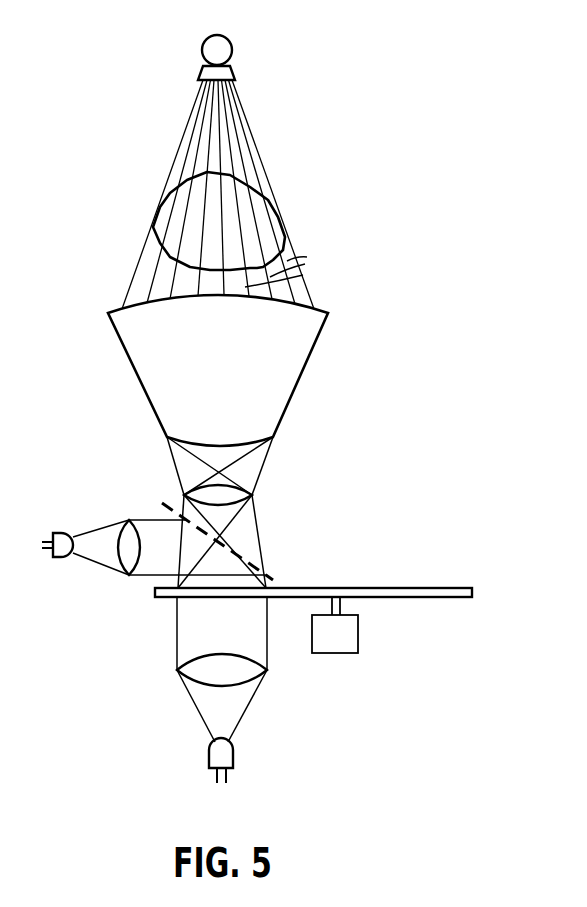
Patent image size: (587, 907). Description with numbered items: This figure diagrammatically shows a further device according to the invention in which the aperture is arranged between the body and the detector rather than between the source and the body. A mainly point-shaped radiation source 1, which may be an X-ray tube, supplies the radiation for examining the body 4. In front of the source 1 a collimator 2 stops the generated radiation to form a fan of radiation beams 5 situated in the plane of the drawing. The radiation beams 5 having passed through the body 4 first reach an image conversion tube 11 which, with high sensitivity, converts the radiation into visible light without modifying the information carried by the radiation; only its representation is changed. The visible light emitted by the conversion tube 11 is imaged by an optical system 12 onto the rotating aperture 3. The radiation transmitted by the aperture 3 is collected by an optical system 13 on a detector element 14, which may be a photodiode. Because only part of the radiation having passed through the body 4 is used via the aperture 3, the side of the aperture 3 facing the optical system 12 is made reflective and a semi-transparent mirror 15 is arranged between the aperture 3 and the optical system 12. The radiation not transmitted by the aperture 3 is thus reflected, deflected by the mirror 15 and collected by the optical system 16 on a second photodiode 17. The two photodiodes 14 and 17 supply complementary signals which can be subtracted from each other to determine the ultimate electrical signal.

The radiation source 1 is at (228, 50).
The collimator 2 is at (233, 70).
The rotating aperture 3 is at (433, 596).
The body 4 is at (277, 225).
The radiation beams 5 is at (285, 268).
The image conversion tube 11 is at (287, 378).
The optical system 12 is at (240, 493).
The optical system 13 is at (252, 668).
The detector element 14 is at (225, 757).
The semi-transparent mirror 15 is at (272, 577).
The optical system 16 is at (127, 558).
The second photodiode 17 is at (62, 553).